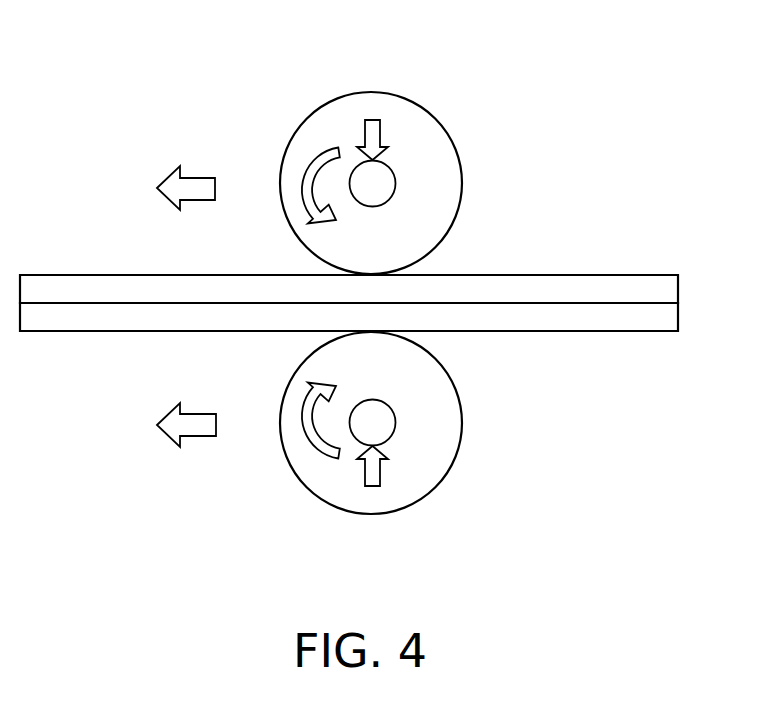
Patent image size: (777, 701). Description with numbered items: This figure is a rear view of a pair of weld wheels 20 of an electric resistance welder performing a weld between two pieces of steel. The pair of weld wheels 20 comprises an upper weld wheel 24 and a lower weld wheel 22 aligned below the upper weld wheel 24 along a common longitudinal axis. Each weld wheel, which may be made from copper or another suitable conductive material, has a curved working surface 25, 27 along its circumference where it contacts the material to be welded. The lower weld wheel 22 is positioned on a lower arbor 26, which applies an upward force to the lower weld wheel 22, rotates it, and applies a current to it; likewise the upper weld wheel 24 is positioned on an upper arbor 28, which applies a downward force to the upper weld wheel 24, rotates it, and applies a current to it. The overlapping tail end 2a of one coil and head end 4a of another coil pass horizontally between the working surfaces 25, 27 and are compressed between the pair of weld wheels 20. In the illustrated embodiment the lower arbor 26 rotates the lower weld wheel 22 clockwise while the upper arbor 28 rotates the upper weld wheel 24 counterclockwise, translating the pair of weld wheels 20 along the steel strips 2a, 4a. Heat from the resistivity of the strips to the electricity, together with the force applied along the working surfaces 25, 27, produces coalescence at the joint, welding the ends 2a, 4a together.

The pair of weld wheels 20 is at (553, 168).
The lower weld wheel 22 is at (443, 410).
The upper weld wheel 24 is at (432, 212).
The working surface 25 is at (430, 348).
The lower arbor 26 is at (378, 430).
The working surface 27 is at (430, 260).
The upper arbor 28 is at (372, 185).
The tail end 2a is at (655, 287).
The head end 4a is at (622, 315).